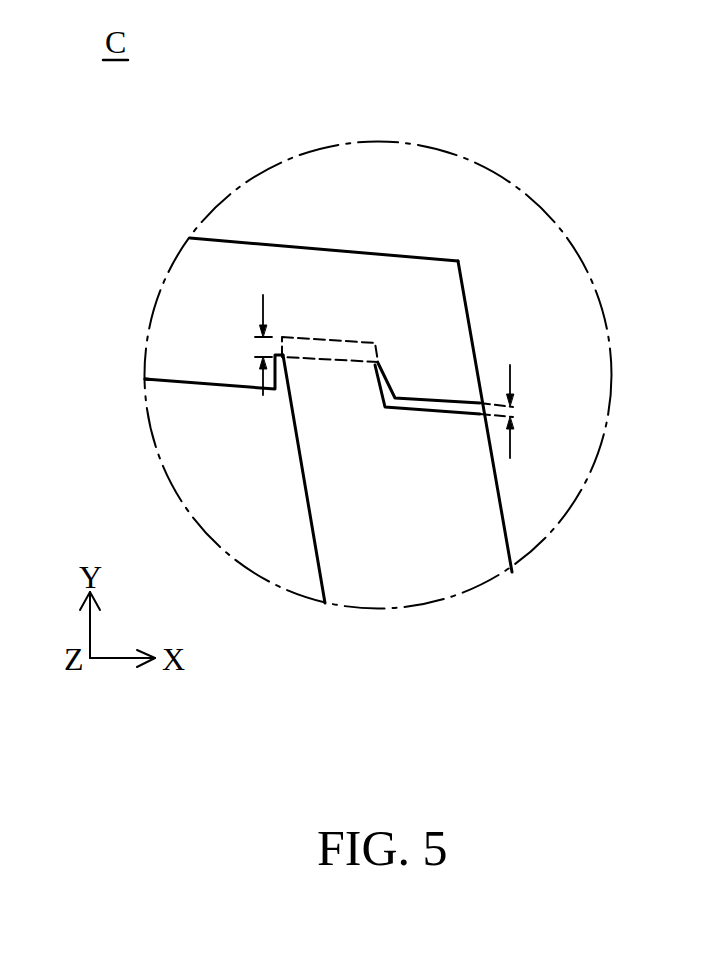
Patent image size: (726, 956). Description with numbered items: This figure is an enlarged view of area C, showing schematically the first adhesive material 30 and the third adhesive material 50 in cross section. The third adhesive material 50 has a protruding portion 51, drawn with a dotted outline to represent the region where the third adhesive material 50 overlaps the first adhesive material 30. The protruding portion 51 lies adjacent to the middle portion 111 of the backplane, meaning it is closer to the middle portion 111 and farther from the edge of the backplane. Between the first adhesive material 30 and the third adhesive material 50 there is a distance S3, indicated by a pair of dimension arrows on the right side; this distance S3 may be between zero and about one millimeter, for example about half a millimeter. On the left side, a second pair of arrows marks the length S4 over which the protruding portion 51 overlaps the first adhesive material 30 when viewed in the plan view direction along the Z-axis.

The first adhesive material 30 is at (177, 303).
The third adhesive material 50 is at (477, 500).
The protruding portion 51 is at (355, 380).
The middle portion 111 is at (190, 472).
The distance S3 is at (512, 412).
The length S4 is at (260, 345).